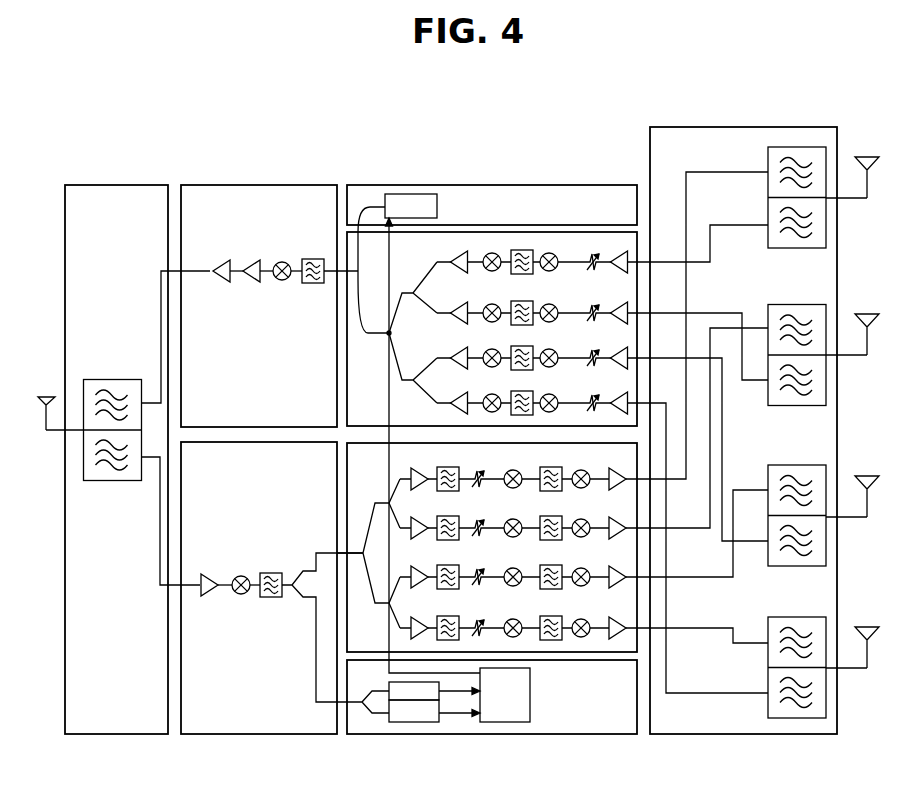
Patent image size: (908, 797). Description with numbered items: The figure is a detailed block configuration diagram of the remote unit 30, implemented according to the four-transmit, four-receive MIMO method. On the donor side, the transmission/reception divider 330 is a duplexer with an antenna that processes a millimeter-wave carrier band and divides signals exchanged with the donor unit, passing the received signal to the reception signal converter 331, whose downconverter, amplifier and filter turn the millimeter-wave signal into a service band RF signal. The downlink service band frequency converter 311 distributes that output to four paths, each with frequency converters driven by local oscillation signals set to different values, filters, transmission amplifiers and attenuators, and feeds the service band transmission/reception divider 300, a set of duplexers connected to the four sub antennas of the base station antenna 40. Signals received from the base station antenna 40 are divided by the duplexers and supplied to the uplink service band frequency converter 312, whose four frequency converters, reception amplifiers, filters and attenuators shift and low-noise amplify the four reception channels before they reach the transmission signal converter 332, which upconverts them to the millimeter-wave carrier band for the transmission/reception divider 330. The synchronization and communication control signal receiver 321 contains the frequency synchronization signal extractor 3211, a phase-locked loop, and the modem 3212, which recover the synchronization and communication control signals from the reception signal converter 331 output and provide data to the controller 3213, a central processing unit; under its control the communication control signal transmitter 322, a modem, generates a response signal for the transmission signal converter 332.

The remote unit 30 is at (172, 170).
The base station antenna 40 is at (868, 698).
The service band transmission/reception divider 300 is at (748, 127).
The transmission/reception divider 330 is at (120, 734).
The reception signal converter 331 is at (260, 734).
The transmission signal converter 332 is at (263, 185).
The communication control signal transmitter 322 is at (497, 185).
The uplink service band frequency converter 312 is at (572, 232).
The downlink service band frequency converter 311 is at (617, 652).
The synchronization and communication control signal receiver 321 is at (531, 734).
The frequency synchronization signal extractor 3211 is at (446, 713).
The modem 3212 is at (412, 722).
The controller 3213 is at (530, 696).